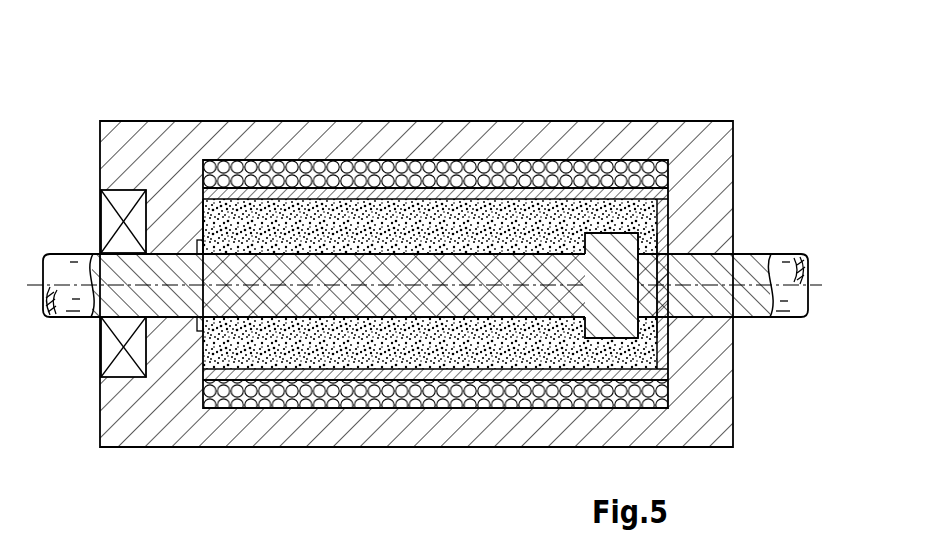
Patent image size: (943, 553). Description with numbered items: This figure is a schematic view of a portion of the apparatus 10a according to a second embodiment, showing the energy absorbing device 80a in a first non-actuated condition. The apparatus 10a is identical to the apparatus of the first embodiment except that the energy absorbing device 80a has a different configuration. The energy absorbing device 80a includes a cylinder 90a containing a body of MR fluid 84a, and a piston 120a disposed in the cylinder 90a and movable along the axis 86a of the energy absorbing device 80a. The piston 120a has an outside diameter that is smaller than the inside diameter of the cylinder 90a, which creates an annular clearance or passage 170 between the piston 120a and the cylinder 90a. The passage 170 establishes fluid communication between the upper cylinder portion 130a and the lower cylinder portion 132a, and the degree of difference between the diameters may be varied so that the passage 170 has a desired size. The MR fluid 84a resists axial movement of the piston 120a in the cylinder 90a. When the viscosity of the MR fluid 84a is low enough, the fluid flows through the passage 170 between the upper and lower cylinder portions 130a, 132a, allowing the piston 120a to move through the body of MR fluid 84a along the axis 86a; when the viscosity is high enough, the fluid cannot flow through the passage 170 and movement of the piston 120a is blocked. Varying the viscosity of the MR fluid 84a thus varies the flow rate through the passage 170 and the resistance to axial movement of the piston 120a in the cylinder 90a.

The apparatus 10a is at (167, 80).
The energy absorbing device 80a is at (230, 66).
The MR fluid 84a is at (328, 230).
The axis 86a is at (736, 318).
The cylinder 90a is at (479, 168).
The piston 120a is at (619, 262).
The upper cylinder portion 130a is at (421, 228).
The lower cylinder portion 132a is at (647, 258).
The passage 170 is at (609, 228).